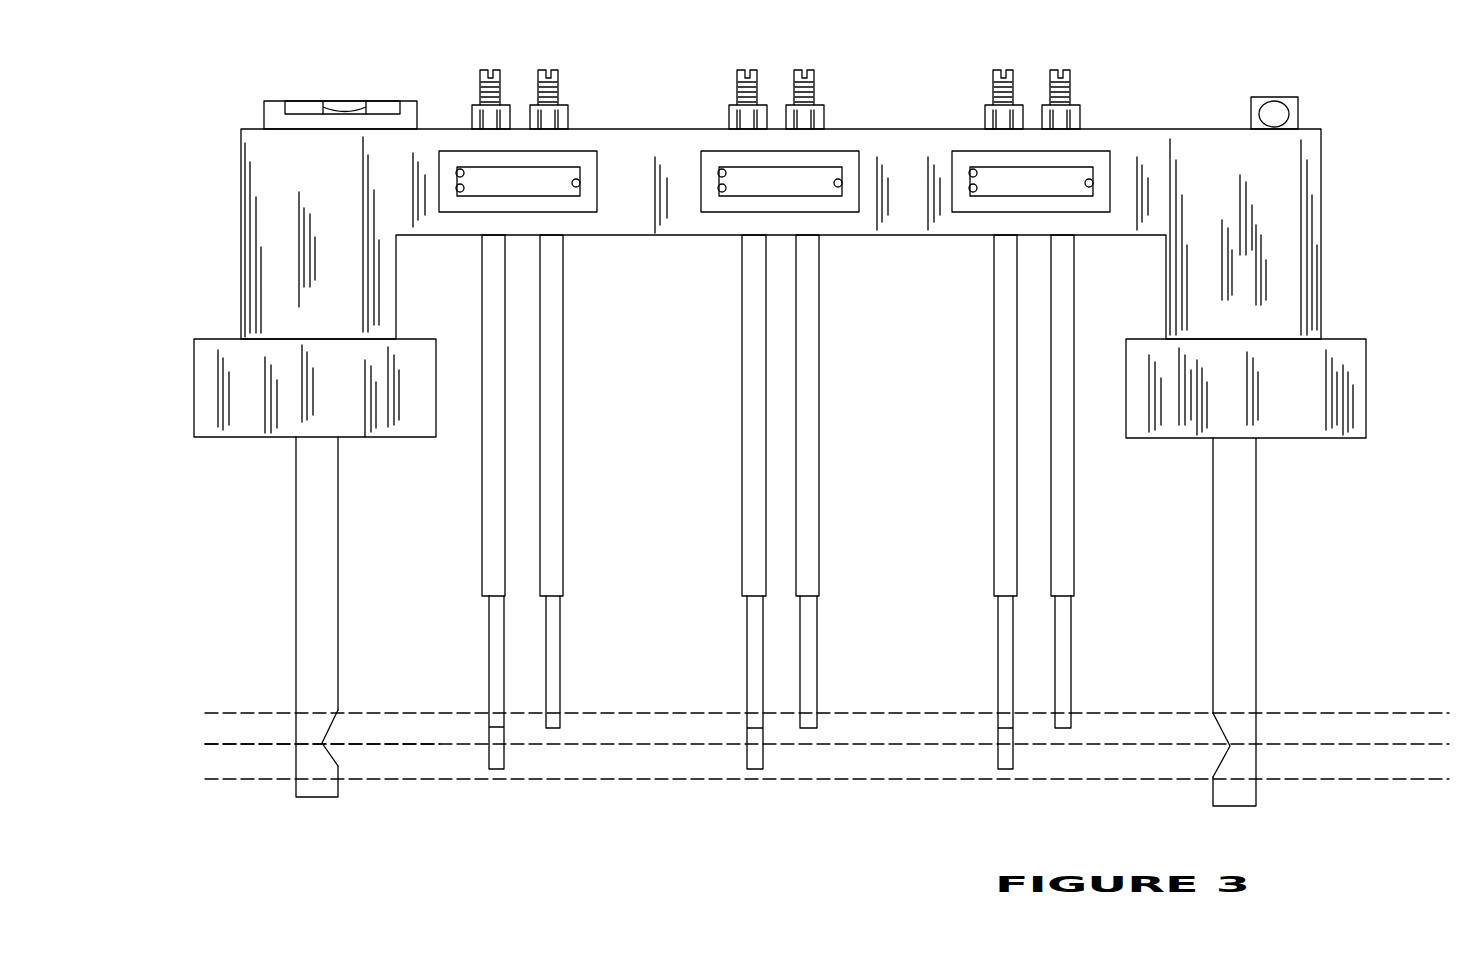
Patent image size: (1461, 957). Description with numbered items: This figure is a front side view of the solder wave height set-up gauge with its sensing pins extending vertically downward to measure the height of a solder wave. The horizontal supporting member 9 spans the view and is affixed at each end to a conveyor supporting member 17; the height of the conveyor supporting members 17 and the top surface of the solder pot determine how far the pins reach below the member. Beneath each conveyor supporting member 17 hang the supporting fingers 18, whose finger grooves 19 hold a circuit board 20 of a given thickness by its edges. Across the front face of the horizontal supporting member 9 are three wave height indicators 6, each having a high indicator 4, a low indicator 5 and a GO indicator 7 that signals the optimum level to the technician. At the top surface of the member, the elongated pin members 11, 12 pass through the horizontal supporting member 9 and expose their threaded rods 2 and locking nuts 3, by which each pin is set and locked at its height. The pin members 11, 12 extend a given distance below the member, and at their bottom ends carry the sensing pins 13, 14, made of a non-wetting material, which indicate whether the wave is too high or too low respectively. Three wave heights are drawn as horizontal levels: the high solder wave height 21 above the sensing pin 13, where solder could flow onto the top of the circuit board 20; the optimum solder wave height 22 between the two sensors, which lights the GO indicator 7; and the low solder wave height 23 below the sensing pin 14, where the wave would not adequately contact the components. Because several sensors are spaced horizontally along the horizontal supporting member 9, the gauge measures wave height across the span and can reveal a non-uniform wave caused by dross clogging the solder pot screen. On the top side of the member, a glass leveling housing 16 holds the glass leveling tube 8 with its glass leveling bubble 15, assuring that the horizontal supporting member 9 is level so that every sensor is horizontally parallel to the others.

The threaded rod 2 is at (553, 92).
The locking nut 3 is at (563, 120).
The high indicator 4 is at (458, 172).
The low indicator 5 is at (463, 190).
The wave height indicator 6 is at (517, 190).
The GO indicator 7 is at (578, 182).
The glass leveling tube 8 is at (385, 109).
The horizontal supporting member 9 is at (1260, 255).
The pin member 11 is at (545, 345).
The pin member 12 is at (485, 383).
The sensing pin 13 is at (557, 697).
The sensing pin 14 is at (752, 677).
The glass leveling bubble 15 is at (337, 105).
The glass leveling housing 16 is at (277, 117).
The conveyor supporting member 17 is at (332, 415).
The supporting fingers 18 is at (327, 623).
The finger grooves 19 is at (324, 743).
The circuit board 20 is at (387, 743).
The high solder wave height 21 is at (425, 714).
The optimum solder wave height 22 is at (687, 747).
The low solder wave height 23 is at (939, 779).